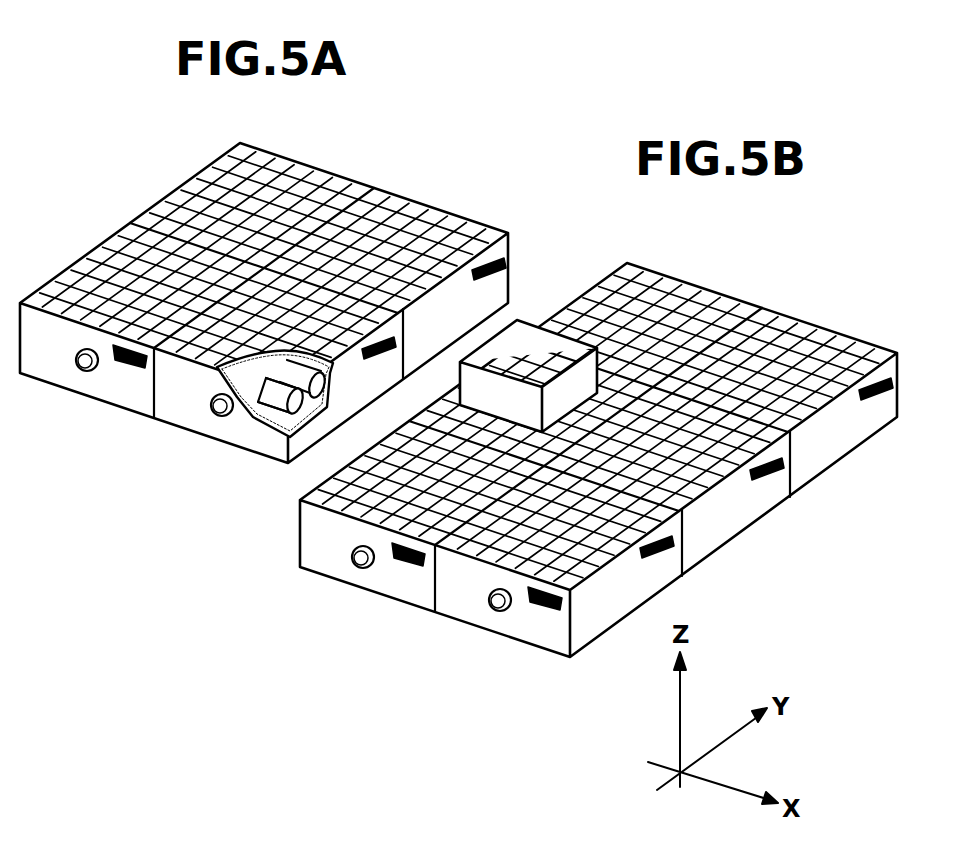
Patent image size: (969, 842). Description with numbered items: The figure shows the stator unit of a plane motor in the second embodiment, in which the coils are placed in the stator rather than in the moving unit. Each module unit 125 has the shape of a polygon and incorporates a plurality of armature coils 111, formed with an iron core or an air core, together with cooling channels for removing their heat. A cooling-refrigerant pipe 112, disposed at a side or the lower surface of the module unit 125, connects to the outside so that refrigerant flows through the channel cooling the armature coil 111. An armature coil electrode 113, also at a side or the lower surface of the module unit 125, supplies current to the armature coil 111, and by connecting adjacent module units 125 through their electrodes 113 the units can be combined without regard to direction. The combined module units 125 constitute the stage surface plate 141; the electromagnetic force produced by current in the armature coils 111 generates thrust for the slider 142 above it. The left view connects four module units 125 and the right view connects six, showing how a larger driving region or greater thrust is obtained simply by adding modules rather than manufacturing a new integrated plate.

In FIG. 5A, the armature coil 111 is at (270, 400).
In FIG. 5A, the cooling-refrigerant pipe 112 is at (211, 413).
In FIG. 5A, the armature coil electrode 113 is at (402, 335).
In FIG. 5A, the module unit 125 is at (502, 292).
In FIG. 5B, the stage surface plate 141 is at (733, 288).
In FIG. 5B, the slider 142 is at (537, 327).